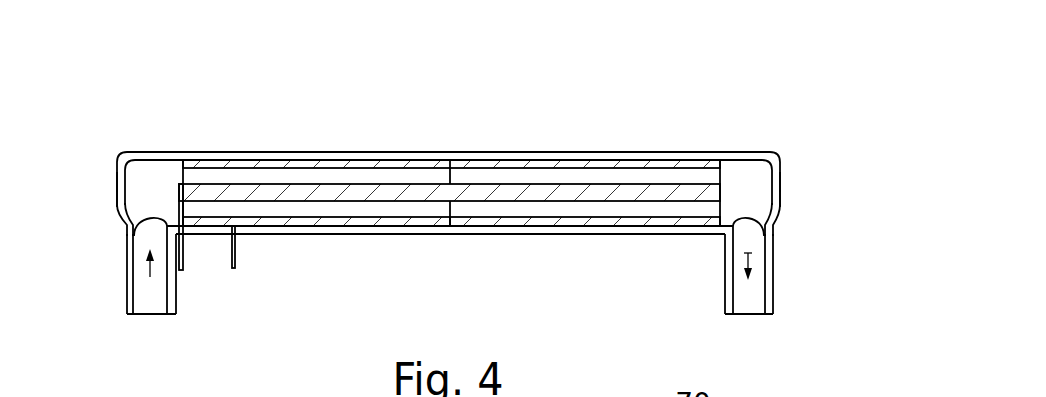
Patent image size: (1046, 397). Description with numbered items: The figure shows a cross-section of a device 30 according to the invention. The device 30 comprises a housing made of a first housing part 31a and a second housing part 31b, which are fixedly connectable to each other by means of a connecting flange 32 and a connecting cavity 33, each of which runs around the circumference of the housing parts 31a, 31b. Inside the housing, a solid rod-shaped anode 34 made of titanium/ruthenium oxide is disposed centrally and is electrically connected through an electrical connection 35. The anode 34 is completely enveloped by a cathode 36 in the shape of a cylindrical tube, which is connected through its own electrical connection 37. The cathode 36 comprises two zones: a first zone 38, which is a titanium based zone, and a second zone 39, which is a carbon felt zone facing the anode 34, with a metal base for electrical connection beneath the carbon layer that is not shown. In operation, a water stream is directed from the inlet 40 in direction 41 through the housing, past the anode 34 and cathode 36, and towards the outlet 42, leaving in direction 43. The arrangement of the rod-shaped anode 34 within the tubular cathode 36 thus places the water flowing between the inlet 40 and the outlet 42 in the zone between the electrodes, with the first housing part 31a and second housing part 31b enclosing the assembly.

The device 30 is at (558, 98).
The first housing part 31a is at (743, 158).
The second housing part 31b is at (780, 211).
The connecting flange 32 is at (116, 172).
The connecting cavity 33 is at (118, 208).
The anode 34 is at (593, 192).
The electrical connection 35 is at (183, 260).
The cathode 36 is at (419, 151).
The electrical connection 37 is at (237, 268).
The first zone 38 is at (413, 224).
The second zone 39 is at (498, 224).
The inlet 40 is at (133, 283).
The direction 41 is at (150, 279).
The outlet 42 is at (769, 290).
The direction 43 is at (752, 253).